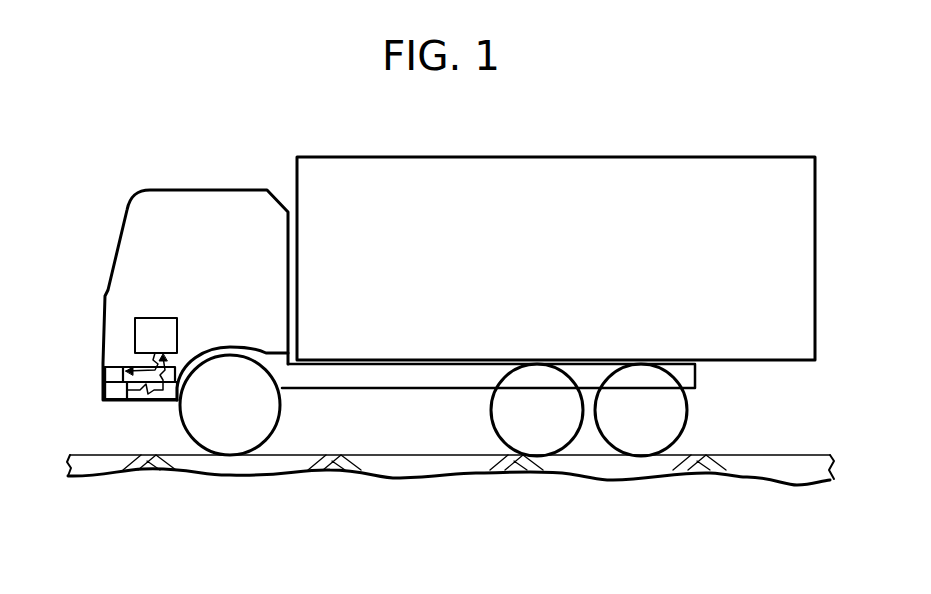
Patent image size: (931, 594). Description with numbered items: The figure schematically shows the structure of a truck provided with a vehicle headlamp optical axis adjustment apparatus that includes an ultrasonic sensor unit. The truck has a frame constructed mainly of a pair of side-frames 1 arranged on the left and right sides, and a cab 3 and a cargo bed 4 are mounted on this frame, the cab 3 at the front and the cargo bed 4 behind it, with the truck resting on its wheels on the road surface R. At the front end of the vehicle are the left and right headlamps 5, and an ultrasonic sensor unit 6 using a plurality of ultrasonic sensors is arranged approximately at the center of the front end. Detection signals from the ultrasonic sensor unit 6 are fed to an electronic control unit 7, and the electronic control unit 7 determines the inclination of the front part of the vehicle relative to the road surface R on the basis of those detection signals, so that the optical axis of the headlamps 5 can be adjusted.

The side-frame 1 is at (434, 317).
The cab 3 is at (205, 207).
The cargo bed 4 is at (515, 168).
The headlamp 5 is at (105, 372).
The ultrasonic sensor unit 6 is at (105, 394).
The electronic control unit (ECU) 7 is at (136, 333).
The road surface R is at (124, 456).